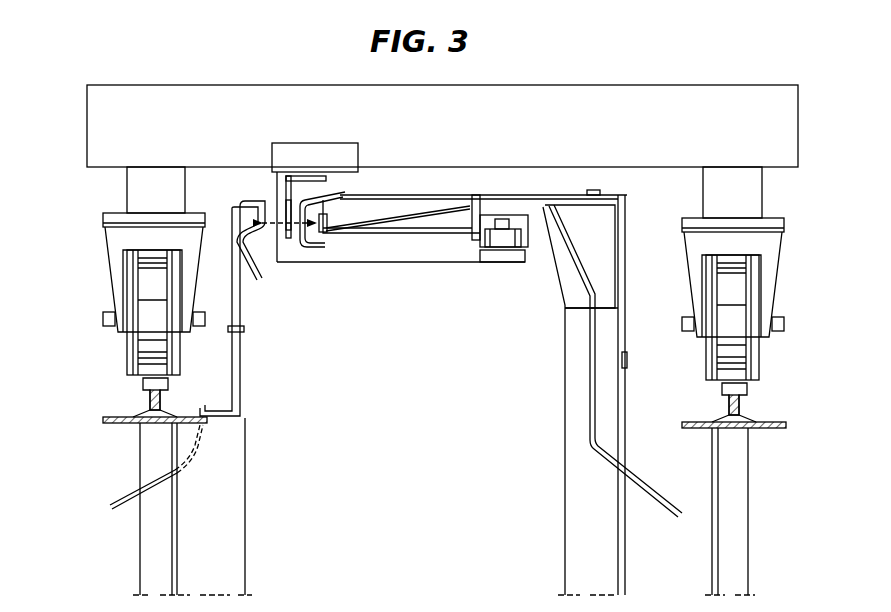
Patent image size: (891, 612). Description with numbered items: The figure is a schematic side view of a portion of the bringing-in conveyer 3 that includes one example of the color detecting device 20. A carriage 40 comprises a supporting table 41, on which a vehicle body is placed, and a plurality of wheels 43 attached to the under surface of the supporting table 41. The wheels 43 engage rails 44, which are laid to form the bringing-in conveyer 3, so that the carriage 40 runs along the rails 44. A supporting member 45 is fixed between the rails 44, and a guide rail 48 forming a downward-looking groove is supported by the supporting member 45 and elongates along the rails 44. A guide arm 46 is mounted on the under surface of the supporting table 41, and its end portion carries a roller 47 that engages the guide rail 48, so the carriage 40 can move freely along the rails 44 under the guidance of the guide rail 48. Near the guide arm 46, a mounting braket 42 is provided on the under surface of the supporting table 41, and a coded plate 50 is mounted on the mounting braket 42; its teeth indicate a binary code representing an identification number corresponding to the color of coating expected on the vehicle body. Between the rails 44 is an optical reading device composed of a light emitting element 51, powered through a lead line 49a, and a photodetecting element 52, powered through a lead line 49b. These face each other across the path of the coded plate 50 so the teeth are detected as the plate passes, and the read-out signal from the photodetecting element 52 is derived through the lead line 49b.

The bringing-in conveyer 3 is at (138, 540).
The color detecting device 20 is at (274, 304).
The carriage 40 is at (485, 126).
The supporting table 41 is at (585, 88).
The mounting braket 42 is at (302, 150).
The wheels 43 is at (148, 300).
The rails 44 is at (135, 412).
The supporting member 45 is at (570, 340).
The guide arm 46 is at (420, 258).
The roller 47 is at (493, 238).
The guide rail 48 is at (488, 215).
The lead line 49a is at (120, 480).
The lead line 49b is at (633, 478).
The coded plate 50 is at (292, 212).
The light emitting element 51 is at (269, 255).
The photodetecting element 52 is at (318, 235).